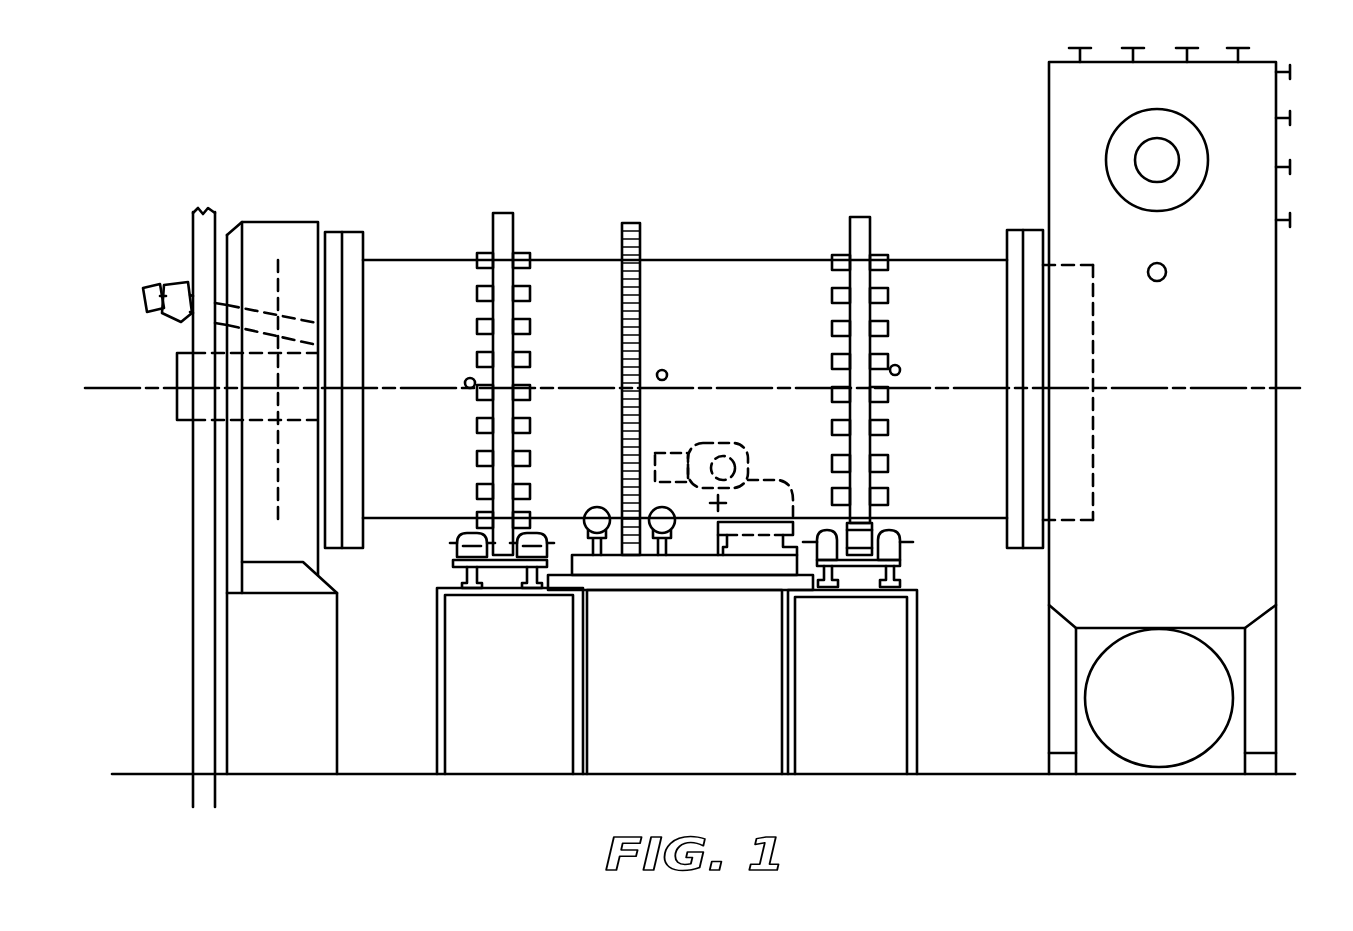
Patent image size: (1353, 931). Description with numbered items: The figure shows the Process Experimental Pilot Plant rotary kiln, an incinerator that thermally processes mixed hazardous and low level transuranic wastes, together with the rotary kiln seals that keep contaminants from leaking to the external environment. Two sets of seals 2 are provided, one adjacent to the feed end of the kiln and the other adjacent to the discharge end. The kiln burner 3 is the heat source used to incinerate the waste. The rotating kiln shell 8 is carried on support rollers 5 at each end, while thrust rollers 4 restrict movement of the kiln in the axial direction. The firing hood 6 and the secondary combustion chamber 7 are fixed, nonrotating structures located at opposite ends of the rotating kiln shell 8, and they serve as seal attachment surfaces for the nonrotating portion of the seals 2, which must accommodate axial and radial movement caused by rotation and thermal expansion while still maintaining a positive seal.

The seals 2 is at (342, 232).
The kiln burner 3 is at (143, 303).
The thrust rollers 4 is at (455, 545).
The support rollers 5 is at (830, 567).
The firing hood 6 is at (269, 222).
The secondary combustion chamber 7 is at (1276, 92).
The rotating kiln shell 8 is at (590, 305).